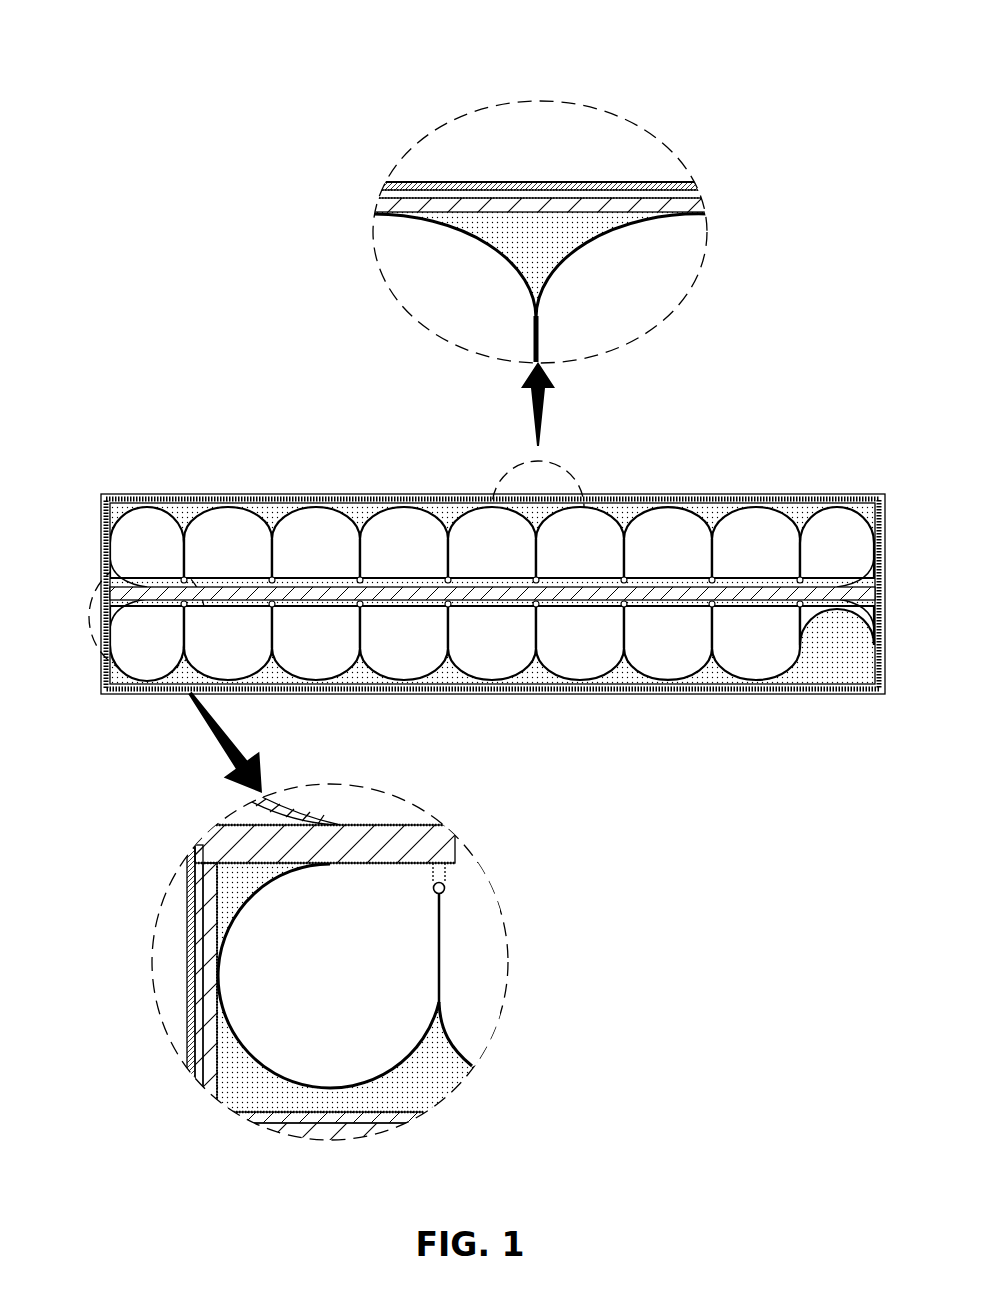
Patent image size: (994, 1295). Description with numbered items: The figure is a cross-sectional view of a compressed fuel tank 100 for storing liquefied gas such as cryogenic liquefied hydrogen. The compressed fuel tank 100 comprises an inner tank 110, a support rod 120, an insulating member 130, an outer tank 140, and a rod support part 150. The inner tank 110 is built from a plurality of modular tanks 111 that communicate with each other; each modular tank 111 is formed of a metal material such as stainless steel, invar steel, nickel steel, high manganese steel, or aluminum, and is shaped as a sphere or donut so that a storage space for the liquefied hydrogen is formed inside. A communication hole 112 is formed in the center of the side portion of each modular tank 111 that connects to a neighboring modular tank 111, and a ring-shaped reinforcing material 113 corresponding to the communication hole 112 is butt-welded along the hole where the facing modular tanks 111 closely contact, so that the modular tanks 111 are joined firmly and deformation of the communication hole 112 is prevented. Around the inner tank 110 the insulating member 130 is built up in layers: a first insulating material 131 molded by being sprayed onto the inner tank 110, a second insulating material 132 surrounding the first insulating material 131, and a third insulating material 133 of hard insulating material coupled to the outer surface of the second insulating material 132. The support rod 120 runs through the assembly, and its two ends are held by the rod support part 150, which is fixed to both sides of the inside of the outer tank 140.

The compressed fuel tank 100 is at (786, 408).
The inner tank 110 is at (614, 678).
The modular tank 111 is at (782, 673).
The communication hole 112 is at (363, 606).
The reinforcing material 113 is at (273, 578).
The support rod 120 is at (233, 593).
The insulating member 130 is at (478, 36).
The first insulating material 131 is at (535, 673).
The second insulating material 132 is at (477, 207).
The third insulating material 133 is at (593, 182).
The outer tank 140 is at (443, 183).
The rod support part 150 is at (198, 963).